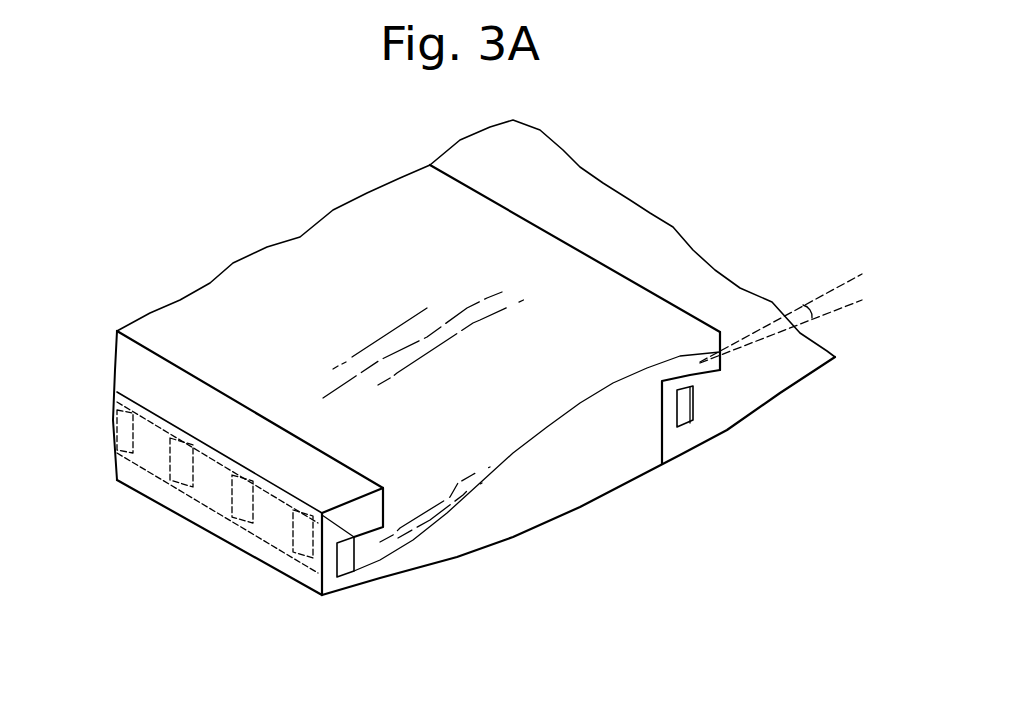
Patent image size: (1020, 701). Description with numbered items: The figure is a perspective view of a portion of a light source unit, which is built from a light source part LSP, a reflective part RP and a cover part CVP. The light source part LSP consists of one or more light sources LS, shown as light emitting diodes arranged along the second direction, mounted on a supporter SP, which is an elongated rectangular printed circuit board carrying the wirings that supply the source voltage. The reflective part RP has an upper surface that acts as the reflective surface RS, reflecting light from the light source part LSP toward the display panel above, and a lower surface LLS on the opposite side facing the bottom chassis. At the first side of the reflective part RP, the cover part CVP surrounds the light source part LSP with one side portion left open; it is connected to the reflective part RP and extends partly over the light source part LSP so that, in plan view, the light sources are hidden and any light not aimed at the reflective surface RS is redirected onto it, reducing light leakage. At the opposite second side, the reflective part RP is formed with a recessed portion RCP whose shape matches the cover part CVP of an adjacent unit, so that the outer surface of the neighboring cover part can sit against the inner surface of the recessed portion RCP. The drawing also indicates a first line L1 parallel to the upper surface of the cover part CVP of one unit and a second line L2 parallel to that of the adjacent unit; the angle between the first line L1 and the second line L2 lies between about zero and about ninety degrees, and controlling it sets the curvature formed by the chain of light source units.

The reflective surface RS is at (300, 253).
The cover part CVP is at (358, 508).
The light source part LSP is at (372, 642).
The light source LS is at (300, 542).
The supporter SP is at (345, 550).
The reflective part RP is at (450, 540).
The lower surface LLS is at (503, 537).
The recessed portion RCP is at (683, 373).
The first line L1 is at (794, 324).
The second line L2 is at (794, 310).